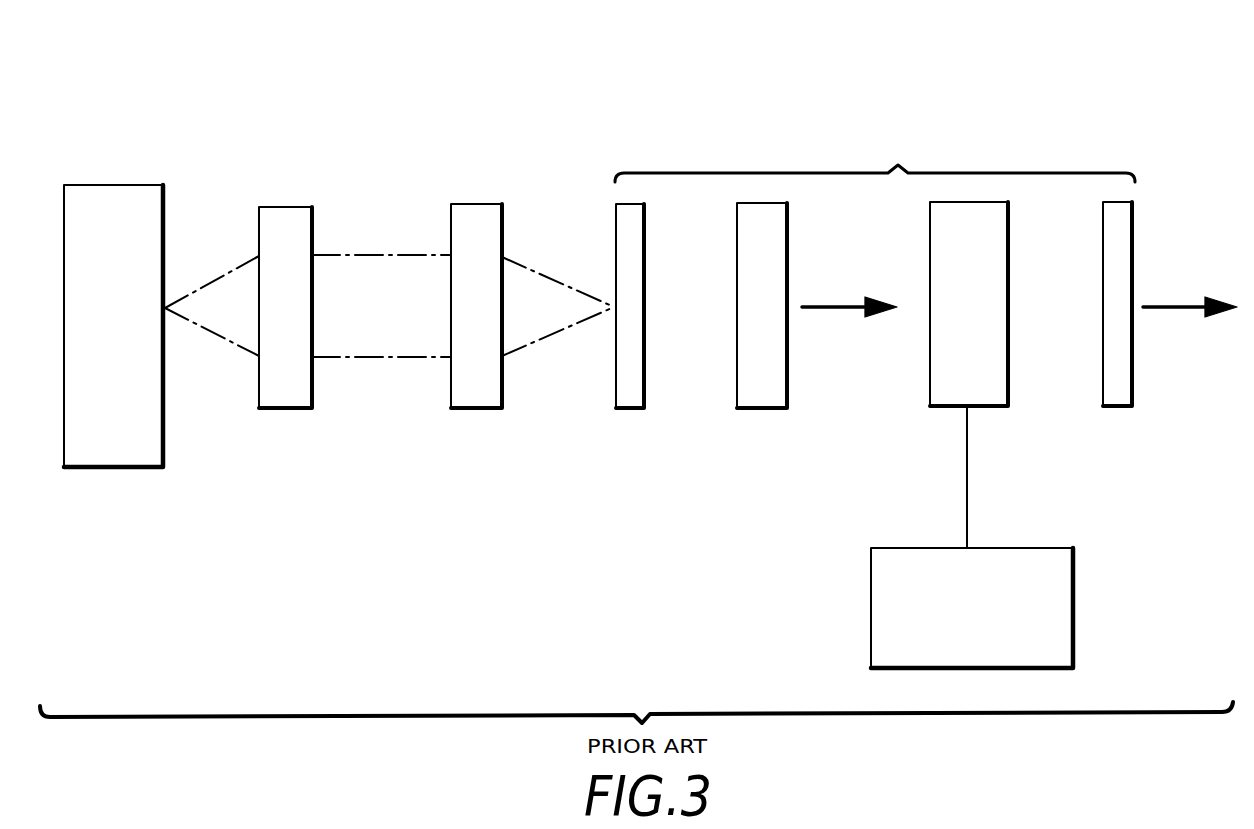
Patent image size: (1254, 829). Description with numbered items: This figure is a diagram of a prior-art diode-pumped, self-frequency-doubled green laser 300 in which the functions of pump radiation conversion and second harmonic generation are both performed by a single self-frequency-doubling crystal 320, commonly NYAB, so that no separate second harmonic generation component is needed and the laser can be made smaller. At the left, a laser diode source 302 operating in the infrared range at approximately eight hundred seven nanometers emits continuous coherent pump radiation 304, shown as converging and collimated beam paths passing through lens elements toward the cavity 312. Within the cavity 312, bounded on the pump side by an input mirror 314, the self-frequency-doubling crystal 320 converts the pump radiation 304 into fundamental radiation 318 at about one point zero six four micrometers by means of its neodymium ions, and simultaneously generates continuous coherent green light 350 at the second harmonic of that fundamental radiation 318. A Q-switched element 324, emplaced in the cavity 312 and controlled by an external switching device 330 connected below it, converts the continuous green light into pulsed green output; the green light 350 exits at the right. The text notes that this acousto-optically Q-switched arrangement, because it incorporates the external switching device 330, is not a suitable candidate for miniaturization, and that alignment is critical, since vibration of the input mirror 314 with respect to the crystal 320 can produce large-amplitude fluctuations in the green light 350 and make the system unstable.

The green laser 300 is at (273, 72).
The laser diode source 302 is at (120, 467).
The pump radiation 304 is at (247, 352).
The cavity 312 is at (875, 159).
The input mirror 314 is at (642, 248).
The fundamental radiation 318 is at (837, 306).
The self-frequency-doubling crystal 320 is at (787, 370).
The Q-switched element 324 is at (1008, 377).
The external switching device 330 is at (1074, 603).
The green light 350 is at (1173, 304).